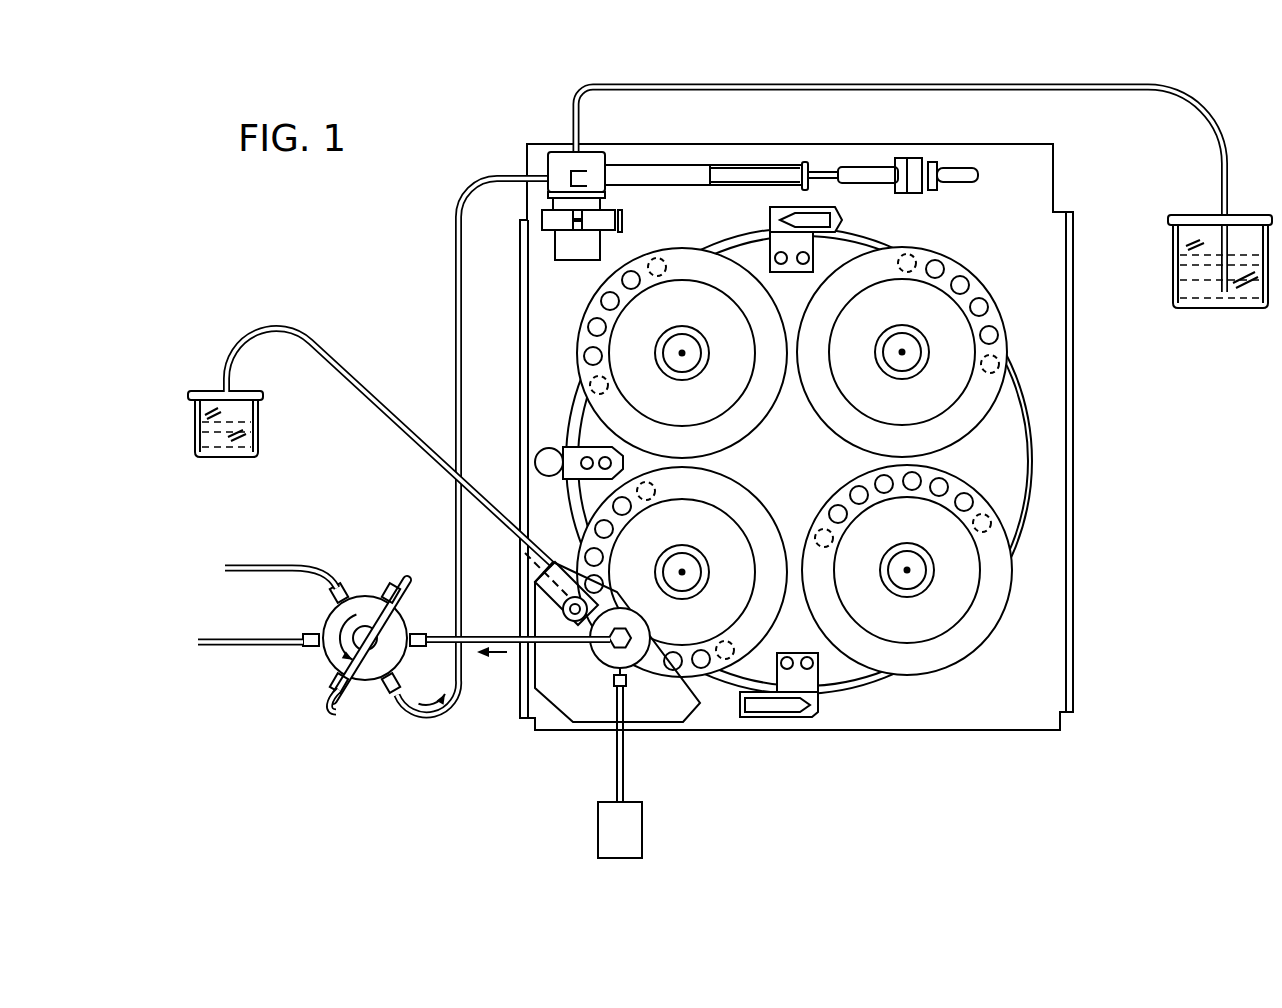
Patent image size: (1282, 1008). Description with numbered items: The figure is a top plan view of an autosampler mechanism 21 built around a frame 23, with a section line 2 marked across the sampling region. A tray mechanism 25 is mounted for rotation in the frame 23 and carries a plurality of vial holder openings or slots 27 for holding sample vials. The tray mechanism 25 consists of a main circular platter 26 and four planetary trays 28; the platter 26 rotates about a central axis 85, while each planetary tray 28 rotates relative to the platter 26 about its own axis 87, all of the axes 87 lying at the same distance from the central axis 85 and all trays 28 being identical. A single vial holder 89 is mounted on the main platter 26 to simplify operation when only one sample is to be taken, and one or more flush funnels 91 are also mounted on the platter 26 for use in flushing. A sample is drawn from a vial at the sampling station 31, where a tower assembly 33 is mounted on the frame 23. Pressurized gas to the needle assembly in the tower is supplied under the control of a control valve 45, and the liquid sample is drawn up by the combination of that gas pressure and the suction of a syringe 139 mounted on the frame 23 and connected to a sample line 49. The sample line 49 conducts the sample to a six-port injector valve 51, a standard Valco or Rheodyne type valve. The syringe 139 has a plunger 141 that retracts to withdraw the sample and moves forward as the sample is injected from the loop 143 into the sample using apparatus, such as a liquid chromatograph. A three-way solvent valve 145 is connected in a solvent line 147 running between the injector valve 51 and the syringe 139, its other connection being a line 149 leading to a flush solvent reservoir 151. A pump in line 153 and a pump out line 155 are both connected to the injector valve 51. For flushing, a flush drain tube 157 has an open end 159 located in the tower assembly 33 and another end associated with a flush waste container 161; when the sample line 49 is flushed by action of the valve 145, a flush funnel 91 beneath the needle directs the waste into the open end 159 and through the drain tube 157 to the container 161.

The autosampler mechanism 21 is at (928, 67).
The frame 23 is at (1038, 162).
The tray mechanism 25 is at (970, 245).
The main circular platter 26 is at (1003, 453).
The vial holder openings 27 is at (631, 272).
The planetary trays 28 is at (744, 379).
The sampling station 31 is at (630, 582).
The tower assembly 33 is at (656, 630).
The control valve 45 is at (634, 820).
The sample line 49 is at (590, 645).
The six-port injector valve 51 is at (364, 608).
The central axis 85 is at (801, 450).
The axis 87 is at (682, 352).
The single vial holder 89 is at (543, 445).
The flush funnels 91 is at (839, 208).
The syringe 139 is at (718, 155).
The plunger 141 is at (697, 176).
The loop 143 is at (356, 706).
The three-way solvent valve 145 is at (598, 158).
The solvent line 147 is at (458, 278).
The line 149 is at (1030, 80).
The flush solvent reservoir 151 is at (1178, 236).
The pump in line 153 is at (272, 645).
The pump out line 155 is at (260, 566).
The flush drain tube 157 is at (403, 436).
The open end 159 is at (562, 611).
The flush waste container 161 is at (262, 415).
The section line 2 is at (615, 546).